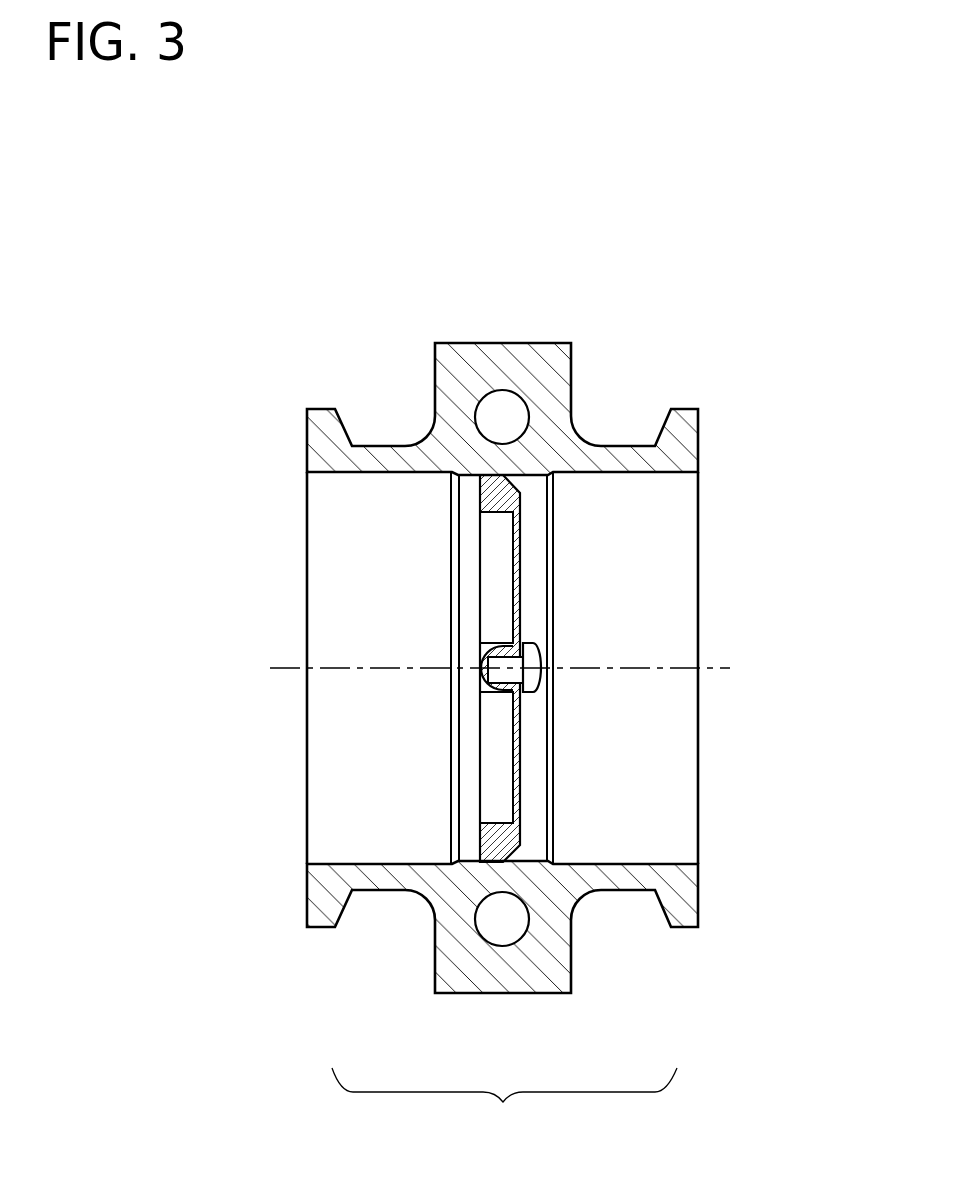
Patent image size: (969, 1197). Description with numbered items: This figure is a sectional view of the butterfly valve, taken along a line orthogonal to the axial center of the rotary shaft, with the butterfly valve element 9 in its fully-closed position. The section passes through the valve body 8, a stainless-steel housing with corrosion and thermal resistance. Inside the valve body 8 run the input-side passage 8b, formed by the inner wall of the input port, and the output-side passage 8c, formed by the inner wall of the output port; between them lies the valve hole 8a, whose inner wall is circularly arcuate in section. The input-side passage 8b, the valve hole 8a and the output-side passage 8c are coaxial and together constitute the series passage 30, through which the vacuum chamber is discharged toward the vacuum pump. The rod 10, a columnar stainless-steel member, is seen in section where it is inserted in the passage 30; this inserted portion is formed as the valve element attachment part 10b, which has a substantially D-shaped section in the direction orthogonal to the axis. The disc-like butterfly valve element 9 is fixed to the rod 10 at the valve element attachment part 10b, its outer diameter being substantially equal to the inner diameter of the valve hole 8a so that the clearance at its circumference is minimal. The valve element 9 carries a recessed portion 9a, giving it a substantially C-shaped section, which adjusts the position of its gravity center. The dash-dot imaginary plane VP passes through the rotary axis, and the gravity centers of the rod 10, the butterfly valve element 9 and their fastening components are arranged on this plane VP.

The valve body 8 is at (570, 457).
The valve hole 8a is at (523, 866).
The input-side passage 8b is at (659, 866).
The output-side passage 8c is at (337, 866).
The passage 30 is at (504, 1105).
The butterfly valve element 9 is at (517, 590).
The recessed portion 9a is at (516, 768).
The rod 10 is at (483, 650).
The valve element attachment part 10b is at (532, 693).
The imaginary plane VP is at (722, 667).